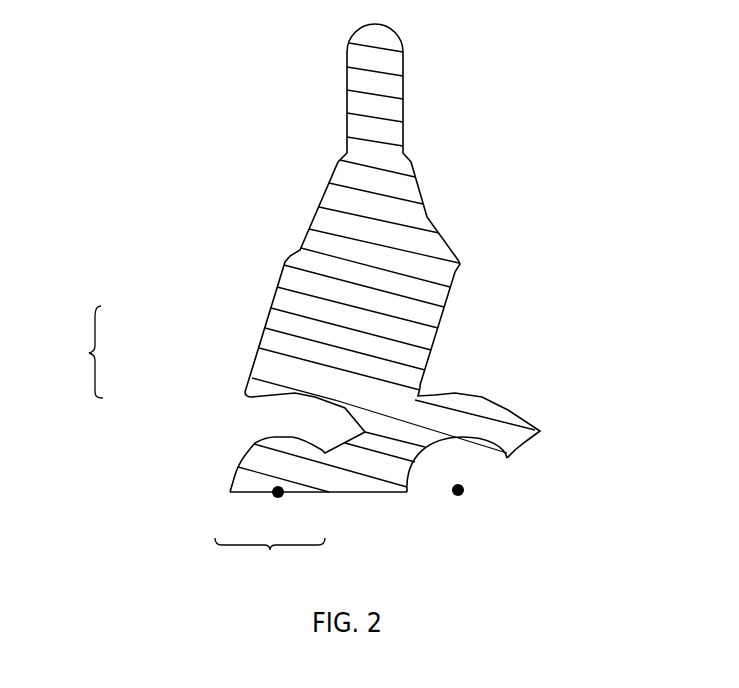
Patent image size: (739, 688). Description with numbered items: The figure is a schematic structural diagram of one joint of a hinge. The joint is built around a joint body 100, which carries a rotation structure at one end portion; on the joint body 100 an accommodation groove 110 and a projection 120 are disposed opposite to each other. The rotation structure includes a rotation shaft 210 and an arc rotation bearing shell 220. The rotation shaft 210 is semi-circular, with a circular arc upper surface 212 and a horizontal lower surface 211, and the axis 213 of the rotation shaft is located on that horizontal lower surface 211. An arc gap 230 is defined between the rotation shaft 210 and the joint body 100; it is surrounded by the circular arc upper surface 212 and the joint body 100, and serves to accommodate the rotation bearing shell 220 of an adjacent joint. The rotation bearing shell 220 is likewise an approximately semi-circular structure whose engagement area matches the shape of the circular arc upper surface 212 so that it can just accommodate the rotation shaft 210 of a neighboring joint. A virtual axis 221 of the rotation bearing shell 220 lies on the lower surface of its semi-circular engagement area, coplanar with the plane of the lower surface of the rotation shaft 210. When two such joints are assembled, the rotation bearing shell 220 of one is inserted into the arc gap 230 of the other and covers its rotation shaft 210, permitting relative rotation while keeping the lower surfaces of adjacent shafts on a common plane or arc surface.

The joint body 100 is at (292, 300).
The accommodation groove 110 is at (440, 387).
The projection 120 is at (270, 347).
The rotation shaft 210 is at (307, 505).
The horizontal lower surface 211 is at (325, 491).
The circular arc upper surface 212 is at (253, 449).
The axis of the rotation shaft 213 is at (280, 496).
The rotation bearing shell 220 is at (503, 420).
The virtual axis of the rotation bearing shell 221 is at (458, 497).
The arc gap 230 is at (365, 78).